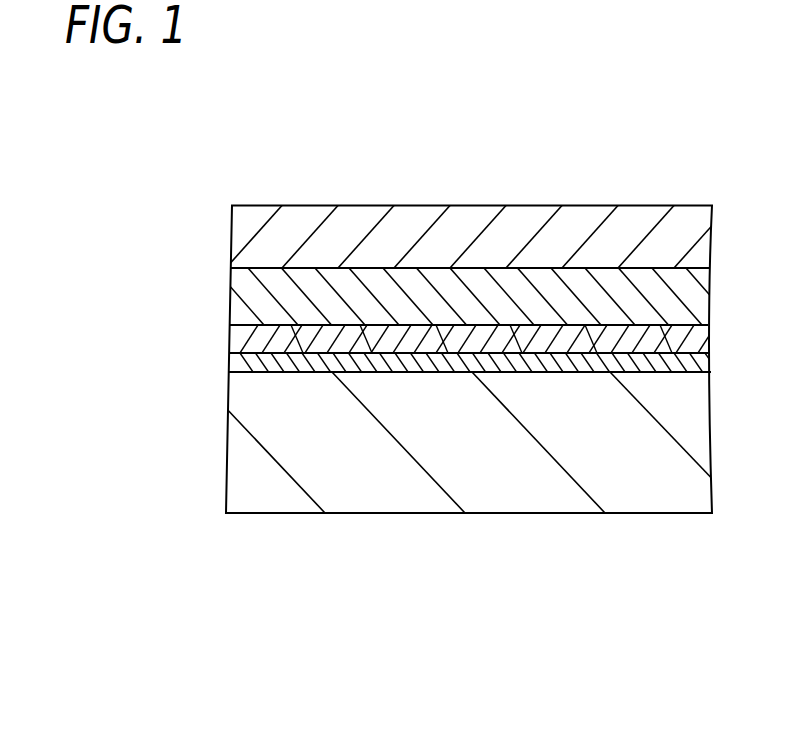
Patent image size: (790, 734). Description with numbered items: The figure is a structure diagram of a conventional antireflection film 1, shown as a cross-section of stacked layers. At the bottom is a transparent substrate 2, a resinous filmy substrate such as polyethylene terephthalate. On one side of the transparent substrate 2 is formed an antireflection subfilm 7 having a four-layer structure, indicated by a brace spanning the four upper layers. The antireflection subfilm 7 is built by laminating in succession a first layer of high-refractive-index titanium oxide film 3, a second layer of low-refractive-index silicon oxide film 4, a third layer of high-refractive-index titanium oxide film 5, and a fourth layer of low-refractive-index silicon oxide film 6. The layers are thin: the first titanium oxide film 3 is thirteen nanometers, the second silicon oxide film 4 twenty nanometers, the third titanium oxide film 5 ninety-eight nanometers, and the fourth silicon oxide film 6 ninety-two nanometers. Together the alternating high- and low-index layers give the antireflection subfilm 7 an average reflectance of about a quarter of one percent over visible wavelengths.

The antireflection film 1 is at (580, 183).
The transparent substrate 2 is at (245, 460).
The first layer of titanium oxide film 3 is at (239, 362).
The second layer of silicon oxide film 4 is at (246, 337).
The third layer of titanium oxide film 5 is at (246, 290).
The fourth layer of silicon oxide film 6 is at (256, 240).
The antireflection subfilm 7 is at (152, 215).